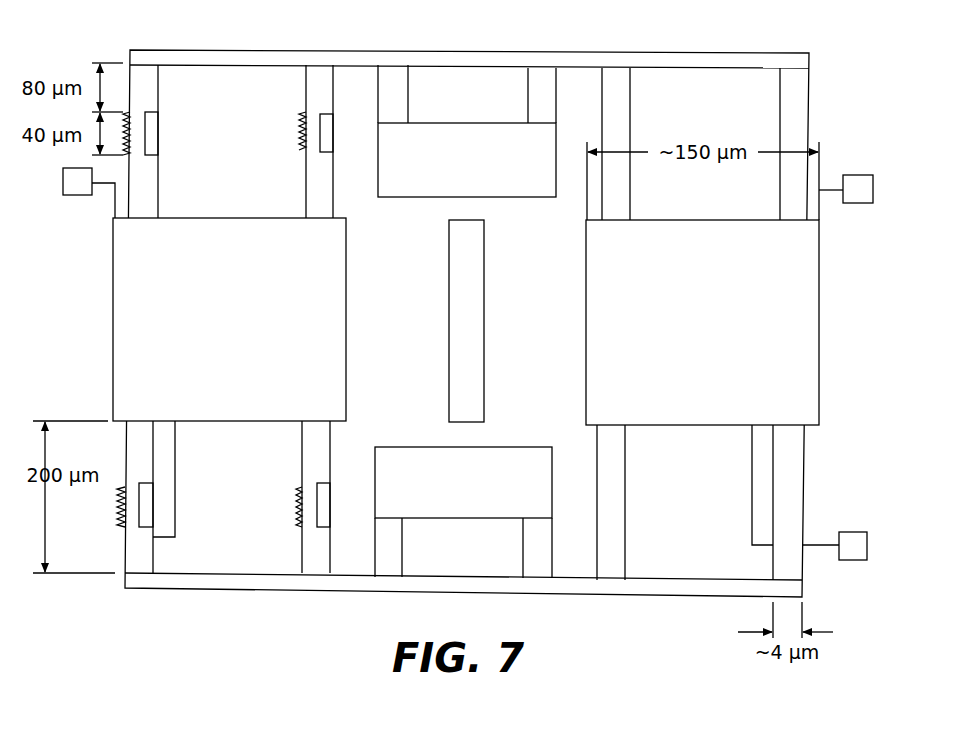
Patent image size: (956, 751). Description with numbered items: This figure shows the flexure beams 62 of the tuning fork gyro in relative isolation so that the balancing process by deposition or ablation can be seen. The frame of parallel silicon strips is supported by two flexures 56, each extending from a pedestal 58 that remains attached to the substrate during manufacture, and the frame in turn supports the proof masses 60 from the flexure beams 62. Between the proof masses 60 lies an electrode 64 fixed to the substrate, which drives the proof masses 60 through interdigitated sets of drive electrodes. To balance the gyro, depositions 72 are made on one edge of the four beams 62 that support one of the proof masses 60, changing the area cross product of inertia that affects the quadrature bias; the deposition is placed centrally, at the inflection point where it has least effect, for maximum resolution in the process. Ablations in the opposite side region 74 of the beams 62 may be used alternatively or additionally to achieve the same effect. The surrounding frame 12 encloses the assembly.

The substrate frame 12 is at (658, 53).
The flexure 56 is at (528, 92).
The pedestal 58 is at (398, 197).
The proof mass 60 is at (113, 296).
The flexure beam 62 is at (305, 92).
The electrode 64 is at (484, 330).
The deposition 72 is at (325, 152).
The opposite side region 74 is at (130, 128).